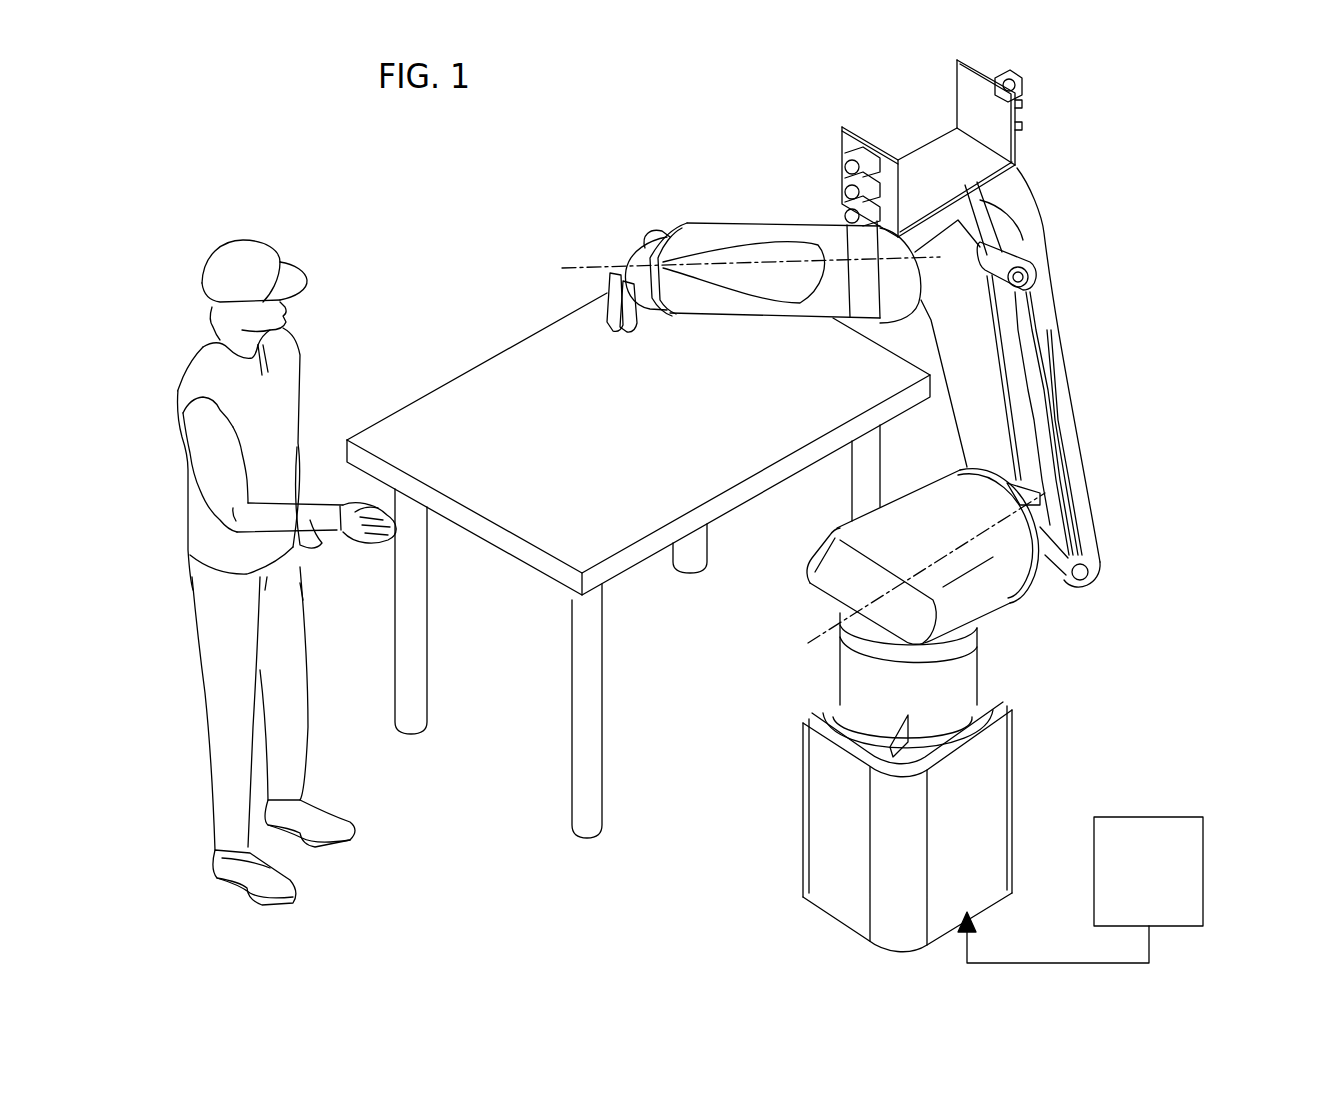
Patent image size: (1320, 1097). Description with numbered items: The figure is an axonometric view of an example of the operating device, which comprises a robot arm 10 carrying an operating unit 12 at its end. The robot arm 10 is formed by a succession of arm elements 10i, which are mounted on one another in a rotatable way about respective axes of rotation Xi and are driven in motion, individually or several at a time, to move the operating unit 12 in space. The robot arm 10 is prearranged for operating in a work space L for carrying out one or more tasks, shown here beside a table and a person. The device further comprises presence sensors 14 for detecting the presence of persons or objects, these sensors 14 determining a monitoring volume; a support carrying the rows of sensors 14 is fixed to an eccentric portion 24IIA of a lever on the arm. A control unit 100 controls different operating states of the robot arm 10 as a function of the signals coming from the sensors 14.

The robot arm 10 is at (1047, 234).
The arm elements 10i is at (1078, 450).
The operating unit 12 is at (626, 333).
The presence sensor 14 is at (843, 207).
The eccentric portion 24IIA is at (967, 207).
The control unit 100 is at (1190, 858).
The axes of rotation Xi is at (772, 262).
The work space L is at (570, 388).